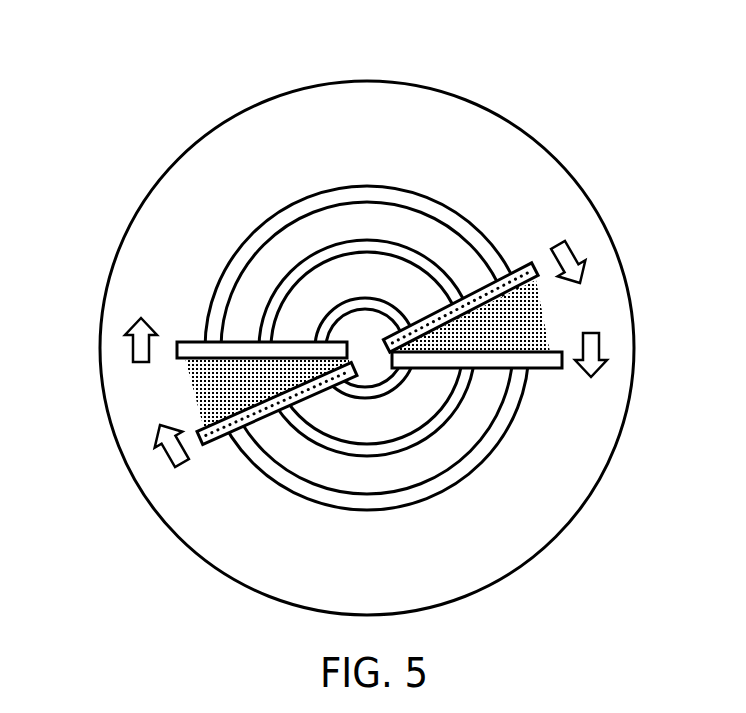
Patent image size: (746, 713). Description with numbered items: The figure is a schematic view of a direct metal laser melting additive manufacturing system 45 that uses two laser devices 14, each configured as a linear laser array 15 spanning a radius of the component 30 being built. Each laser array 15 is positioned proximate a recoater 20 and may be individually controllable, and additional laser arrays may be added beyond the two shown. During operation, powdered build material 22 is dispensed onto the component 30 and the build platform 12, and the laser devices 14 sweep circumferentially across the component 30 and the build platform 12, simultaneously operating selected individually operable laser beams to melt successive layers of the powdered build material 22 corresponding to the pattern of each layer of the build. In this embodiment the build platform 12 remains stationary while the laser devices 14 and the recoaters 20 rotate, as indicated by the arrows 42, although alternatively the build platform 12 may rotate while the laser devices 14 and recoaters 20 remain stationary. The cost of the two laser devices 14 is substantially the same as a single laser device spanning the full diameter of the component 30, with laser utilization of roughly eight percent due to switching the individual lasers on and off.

The build platform 12 is at (152, 183).
The laser device 14 is at (365, 347).
The laser array 15 is at (222, 445).
The recoater 20 is at (178, 346).
The powdered build material 22 is at (193, 392).
The component 30 is at (362, 513).
The arrows 42 is at (133, 350).
The DMLM system 45 is at (580, 72).